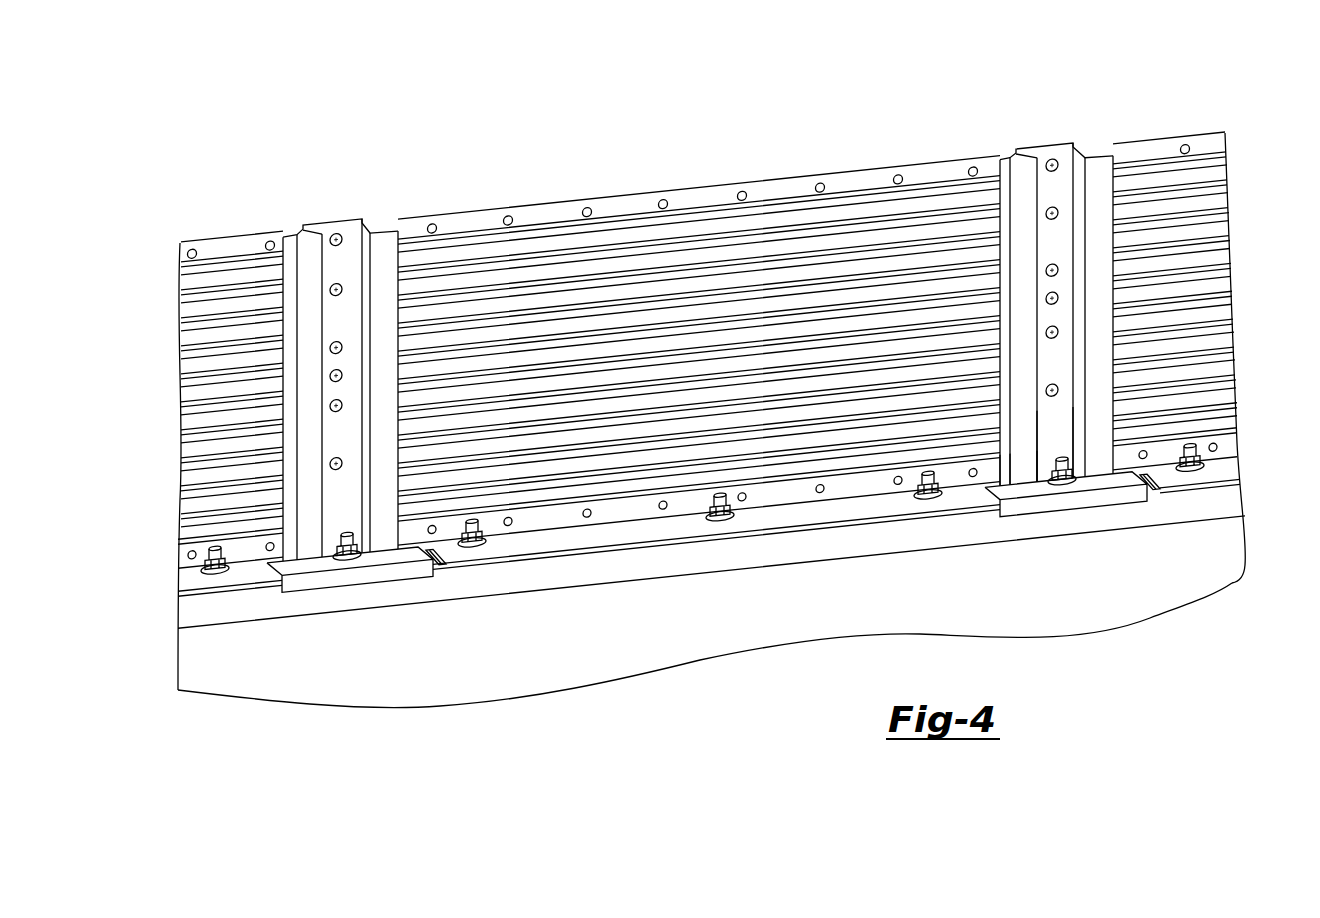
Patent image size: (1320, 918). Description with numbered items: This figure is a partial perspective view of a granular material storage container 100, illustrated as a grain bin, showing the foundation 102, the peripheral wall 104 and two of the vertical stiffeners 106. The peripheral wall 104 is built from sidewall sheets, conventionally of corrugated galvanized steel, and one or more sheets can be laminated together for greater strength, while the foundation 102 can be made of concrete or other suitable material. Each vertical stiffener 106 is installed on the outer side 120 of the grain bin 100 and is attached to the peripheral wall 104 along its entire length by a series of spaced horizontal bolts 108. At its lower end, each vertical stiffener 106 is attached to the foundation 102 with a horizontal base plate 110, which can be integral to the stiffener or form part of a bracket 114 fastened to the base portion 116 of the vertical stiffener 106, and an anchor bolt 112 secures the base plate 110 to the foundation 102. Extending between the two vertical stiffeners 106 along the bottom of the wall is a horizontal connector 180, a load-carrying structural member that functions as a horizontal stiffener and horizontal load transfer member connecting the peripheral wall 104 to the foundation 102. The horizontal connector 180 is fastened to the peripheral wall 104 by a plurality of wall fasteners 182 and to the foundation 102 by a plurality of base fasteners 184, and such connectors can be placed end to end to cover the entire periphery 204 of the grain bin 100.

The granular material storage container 100 is at (719, 128).
The foundation 102 is at (1190, 527).
The peripheral wall 104 is at (840, 215).
The vertical stiffener 106 is at (386, 230).
The horizontal bolt 108 is at (334, 235).
The horizontal base plate 110 is at (412, 562).
The anchor bolt 112 is at (347, 567).
The bracket 114 is at (1045, 490).
The base portion 116 is at (1062, 432).
The outer side 120 is at (622, 207).
The horizontal connector 180 is at (654, 534).
The wall fastener 182 is at (509, 524).
The base fastener 184 is at (730, 528).
The periphery 204 is at (1233, 452).